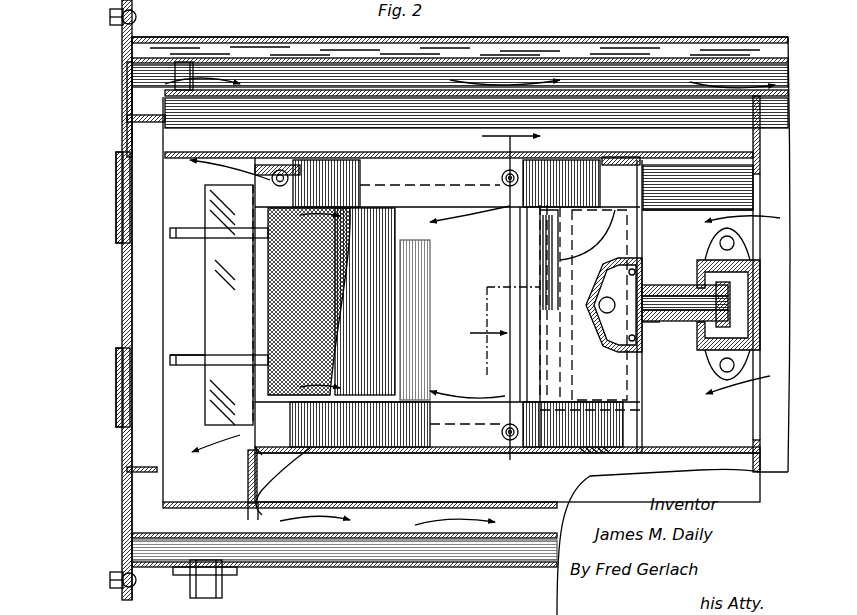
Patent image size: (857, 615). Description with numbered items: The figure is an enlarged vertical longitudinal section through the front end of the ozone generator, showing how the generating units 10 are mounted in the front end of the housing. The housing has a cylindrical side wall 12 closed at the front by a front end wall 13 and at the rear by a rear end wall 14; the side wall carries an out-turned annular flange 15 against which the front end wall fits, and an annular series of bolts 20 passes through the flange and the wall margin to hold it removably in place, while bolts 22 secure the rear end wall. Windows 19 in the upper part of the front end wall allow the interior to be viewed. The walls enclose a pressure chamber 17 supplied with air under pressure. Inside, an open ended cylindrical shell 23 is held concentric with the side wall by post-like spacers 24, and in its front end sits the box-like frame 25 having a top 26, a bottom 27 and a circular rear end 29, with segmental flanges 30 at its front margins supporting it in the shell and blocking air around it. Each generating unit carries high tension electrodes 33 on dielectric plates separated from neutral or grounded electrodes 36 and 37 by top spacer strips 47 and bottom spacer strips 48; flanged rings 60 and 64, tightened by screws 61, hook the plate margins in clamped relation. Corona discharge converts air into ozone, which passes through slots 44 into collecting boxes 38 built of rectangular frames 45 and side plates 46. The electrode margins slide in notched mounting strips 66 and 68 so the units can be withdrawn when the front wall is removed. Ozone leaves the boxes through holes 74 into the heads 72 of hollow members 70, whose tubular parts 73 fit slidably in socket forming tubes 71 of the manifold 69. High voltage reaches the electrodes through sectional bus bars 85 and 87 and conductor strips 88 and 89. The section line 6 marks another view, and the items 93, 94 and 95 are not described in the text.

The section line 6- 6 is at (505, 289).
The ozone generating unit 10 is at (222, 342).
The cylindrical side wall 12 is at (576, 60).
The front end wall 13 is at (122, 30).
The rear end wall 14 is at (788, 40).
The out-turned annular flange 15 is at (136, 36).
The pressure chamber 17 is at (397, 530).
The window 19 is at (117, 188).
The bolt 20 is at (132, 18).
The bolt 22 is at (766, 6).
The cylindrical shell 23 is at (426, 90).
The post-like spacer 24 is at (190, 88).
The box-like frame 25 is at (405, 152).
The top 26 is at (738, 156).
The bottom 27 is at (447, 462).
The rear end 29 is at (760, 143).
The segmental flange 30 is at (753, 208).
The high tension electrode 33 is at (352, 250).
The neutral or grounded electrode 36 is at (632, 192).
The neutral or grounded electrode 37 is at (485, 326).
The collecting box 38 is at (599, 305).
The slot 44 is at (547, 232).
The rectangular frame 45 is at (546, 248).
The side plate 46 is at (622, 377).
The top spacer strip 47 is at (458, 203).
The bottom spacer strip 48 is at (453, 405).
The flanged ring 60 is at (280, 165).
The screw 61 is at (288, 178).
The flanged ring 64 is at (262, 432).
The mounting strip 66 is at (620, 158).
The mounting strip 68 is at (292, 449).
The manifold 69 is at (716, 350).
The hollow member 70 is at (673, 284).
The socket forming tube 71 is at (700, 346).
The head 72 is at (616, 263).
The tubular part 73 is at (656, 322).
The hole 74 is at (606, 314).
The sectional bus bar 85 is at (221, 292).
The sectional bus bar 87 is at (176, 354).
The conductor strip 88 is at (190, 240).
The conductor strip 89 is at (224, 366).
The duct wall 93 is at (308, 58).
The duct top wall 94 is at (262, 43).
The drain fitting 95 is at (223, 589).